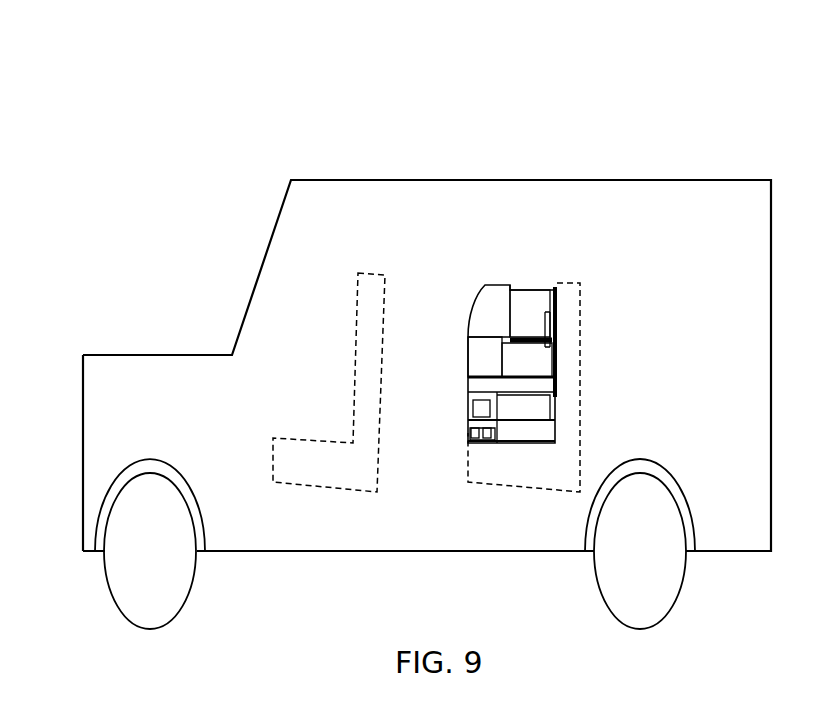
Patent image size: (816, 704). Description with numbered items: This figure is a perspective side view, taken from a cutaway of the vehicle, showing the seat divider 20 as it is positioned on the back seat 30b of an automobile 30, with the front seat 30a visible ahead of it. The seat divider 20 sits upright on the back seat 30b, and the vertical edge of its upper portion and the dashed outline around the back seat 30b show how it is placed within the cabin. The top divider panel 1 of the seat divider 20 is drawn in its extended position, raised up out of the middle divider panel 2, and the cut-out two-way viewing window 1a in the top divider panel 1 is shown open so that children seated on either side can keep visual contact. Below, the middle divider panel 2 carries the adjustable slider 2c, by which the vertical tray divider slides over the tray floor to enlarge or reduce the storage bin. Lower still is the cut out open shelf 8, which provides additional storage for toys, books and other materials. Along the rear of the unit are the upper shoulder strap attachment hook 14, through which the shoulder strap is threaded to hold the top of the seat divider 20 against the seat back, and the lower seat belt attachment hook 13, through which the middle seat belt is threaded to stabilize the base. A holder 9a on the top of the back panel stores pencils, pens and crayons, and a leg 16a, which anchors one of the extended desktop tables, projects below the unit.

The seat divider 20 is at (428, 279).
The automobile 30 is at (270, 212).
The front seat 30a is at (348, 333).
The back seat 30b is at (568, 277).
The top divider panel 1 is at (478, 300).
The two-way viewing window 1a is at (535, 322).
The middle divider panel 2 is at (538, 358).
The adjustable slider 2c is at (493, 357).
The upper shoulder strap attachment hook 14 is at (559, 302).
The holder 9a is at (558, 325).
The lower seat belt attachment hook 13 is at (538, 412).
The cut out open shelf 8 is at (529, 434).
The leg 16a is at (482, 446).